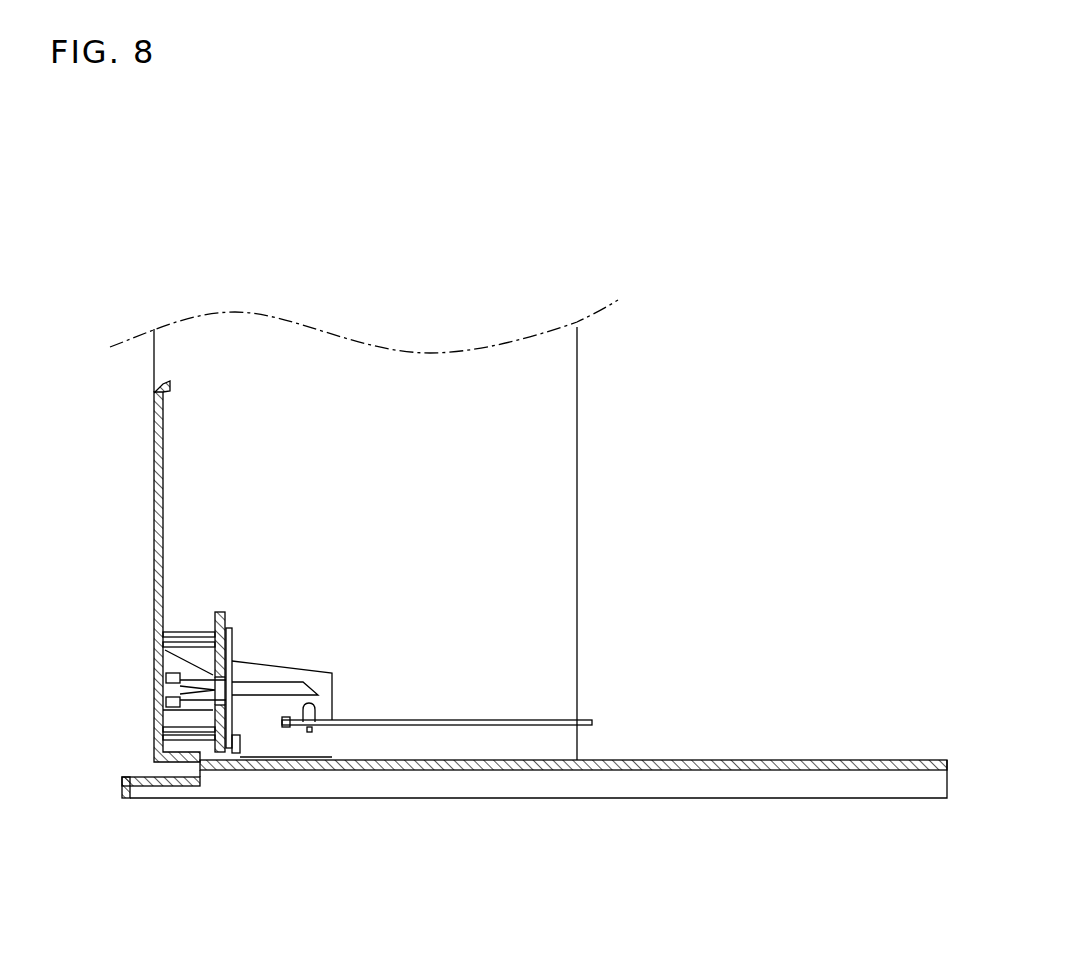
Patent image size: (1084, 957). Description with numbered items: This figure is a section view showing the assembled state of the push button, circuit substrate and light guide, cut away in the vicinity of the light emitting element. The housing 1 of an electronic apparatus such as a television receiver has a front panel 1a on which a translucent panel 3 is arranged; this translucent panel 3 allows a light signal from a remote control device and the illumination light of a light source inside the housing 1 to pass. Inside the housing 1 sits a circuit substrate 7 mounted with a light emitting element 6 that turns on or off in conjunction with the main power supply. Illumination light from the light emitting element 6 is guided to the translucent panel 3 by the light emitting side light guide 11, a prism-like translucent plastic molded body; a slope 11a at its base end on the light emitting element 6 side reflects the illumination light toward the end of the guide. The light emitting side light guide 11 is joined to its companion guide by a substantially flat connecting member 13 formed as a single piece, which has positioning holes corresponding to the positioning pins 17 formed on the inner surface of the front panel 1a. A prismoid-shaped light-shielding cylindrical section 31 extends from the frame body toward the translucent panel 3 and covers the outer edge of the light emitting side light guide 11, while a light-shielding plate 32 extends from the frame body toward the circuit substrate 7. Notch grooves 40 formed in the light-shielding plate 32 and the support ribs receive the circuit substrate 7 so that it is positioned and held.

The housing 1 is at (133, 421).
The front panel 1a is at (156, 505).
The positioning pins 17 is at (234, 641).
The light-shielding cylindrical section 31 is at (197, 677).
The translucent panel 3 is at (158, 692).
The connecting member 13 is at (172, 703).
The light-shielding plate 32 is at (277, 738).
The light emitting side light guide 11 is at (250, 692).
The light emitting element 6 is at (302, 710).
The notch grooves 40 is at (333, 722).
The slope 11a is at (315, 689).
The circuit substrate 7 is at (558, 727).